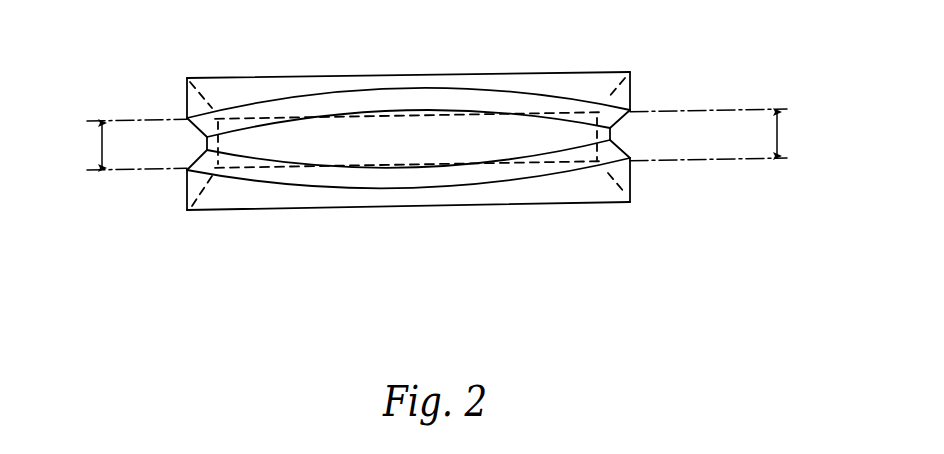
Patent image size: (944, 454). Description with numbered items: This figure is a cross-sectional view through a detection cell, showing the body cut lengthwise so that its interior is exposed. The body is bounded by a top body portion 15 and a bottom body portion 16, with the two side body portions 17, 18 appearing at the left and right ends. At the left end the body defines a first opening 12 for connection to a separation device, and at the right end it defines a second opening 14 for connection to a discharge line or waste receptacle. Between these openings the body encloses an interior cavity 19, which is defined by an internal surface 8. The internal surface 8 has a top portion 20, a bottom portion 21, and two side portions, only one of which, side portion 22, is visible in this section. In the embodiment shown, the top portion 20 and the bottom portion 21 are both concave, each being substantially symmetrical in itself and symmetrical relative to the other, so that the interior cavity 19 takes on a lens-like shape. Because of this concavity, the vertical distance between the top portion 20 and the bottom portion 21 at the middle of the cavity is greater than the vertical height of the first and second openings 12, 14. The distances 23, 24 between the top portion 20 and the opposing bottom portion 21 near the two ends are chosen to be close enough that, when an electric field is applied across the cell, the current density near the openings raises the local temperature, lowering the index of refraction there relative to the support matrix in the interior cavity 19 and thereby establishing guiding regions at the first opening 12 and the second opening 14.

The internal surface 8 is at (300, 108).
The first opening 12 is at (205, 147).
The second opening 14 is at (612, 140).
The top body portion 15 is at (555, 78).
The bottom body portion 16 is at (533, 193).
The side body portion 17 is at (185, 118).
The side body portion 18 is at (632, 90).
The interior cavity 19 is at (356, 147).
The top portion 20 is at (367, 100).
The bottom portion 21 is at (449, 178).
The side portion 22 is at (563, 145).
The distance 23 is at (102, 147).
The distance 24 is at (782, 133).